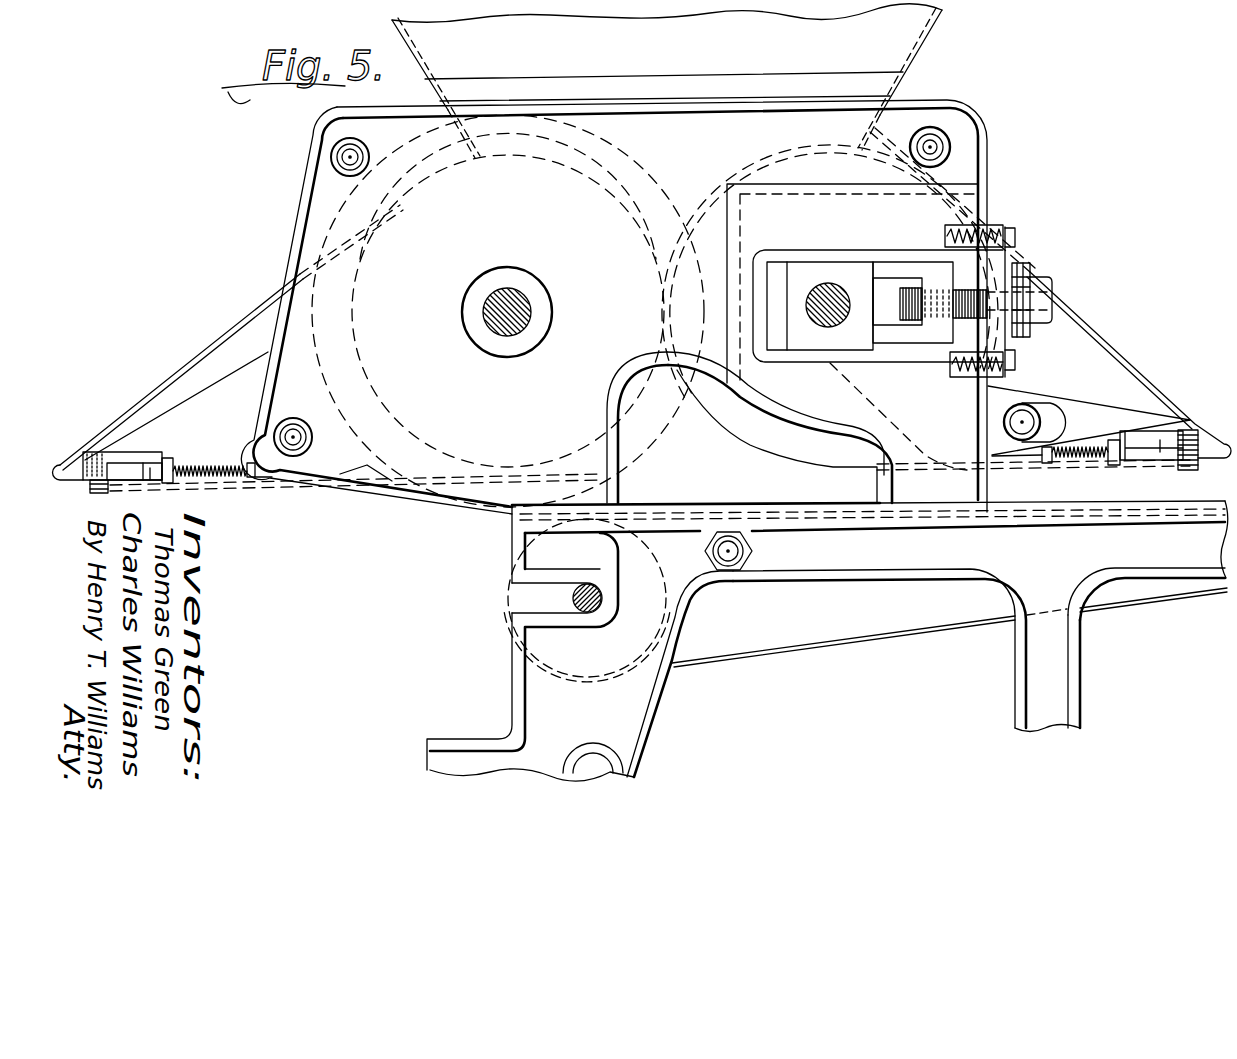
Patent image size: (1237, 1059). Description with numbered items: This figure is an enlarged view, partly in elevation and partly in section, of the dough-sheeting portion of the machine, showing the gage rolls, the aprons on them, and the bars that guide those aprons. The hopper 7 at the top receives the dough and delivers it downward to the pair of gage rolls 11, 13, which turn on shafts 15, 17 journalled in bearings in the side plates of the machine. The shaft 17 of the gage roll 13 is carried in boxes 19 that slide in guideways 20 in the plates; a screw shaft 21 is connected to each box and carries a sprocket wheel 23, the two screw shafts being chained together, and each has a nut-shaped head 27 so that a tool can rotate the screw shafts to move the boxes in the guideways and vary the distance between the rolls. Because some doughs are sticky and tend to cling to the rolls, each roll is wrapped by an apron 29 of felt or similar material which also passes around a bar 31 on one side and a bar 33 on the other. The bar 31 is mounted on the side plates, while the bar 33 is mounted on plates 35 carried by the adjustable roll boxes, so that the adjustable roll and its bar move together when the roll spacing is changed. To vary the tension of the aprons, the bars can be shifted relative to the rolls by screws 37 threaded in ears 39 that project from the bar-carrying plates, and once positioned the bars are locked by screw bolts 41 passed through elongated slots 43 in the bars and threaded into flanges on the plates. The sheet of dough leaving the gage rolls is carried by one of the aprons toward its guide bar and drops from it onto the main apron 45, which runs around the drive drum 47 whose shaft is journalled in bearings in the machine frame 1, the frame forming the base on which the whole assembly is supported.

The frame 1 is at (1057, 700).
The hopper 7 is at (907, 40).
The gage roll 11 is at (626, 402).
The gage roll 13 is at (752, 437).
The shaft 15 is at (518, 300).
The shaft 17 is at (830, 292).
The box 19 is at (840, 270).
The guideway 20 is at (898, 266).
The screw shaft 21 is at (903, 322).
The sprocket wheel 23 is at (1023, 263).
The nut-shaped head 27 is at (1038, 300).
The apron 29 is at (206, 348).
The bar 31 is at (118, 452).
The bar 33 is at (1162, 454).
The plate 35 is at (1004, 468).
The screw 37 is at (210, 468).
The ear 39 is at (169, 457).
The screw bolt 41 is at (104, 492).
The elongated slot 43 is at (143, 487).
The main apron 45 is at (806, 648).
The drive drum 47 is at (668, 617).